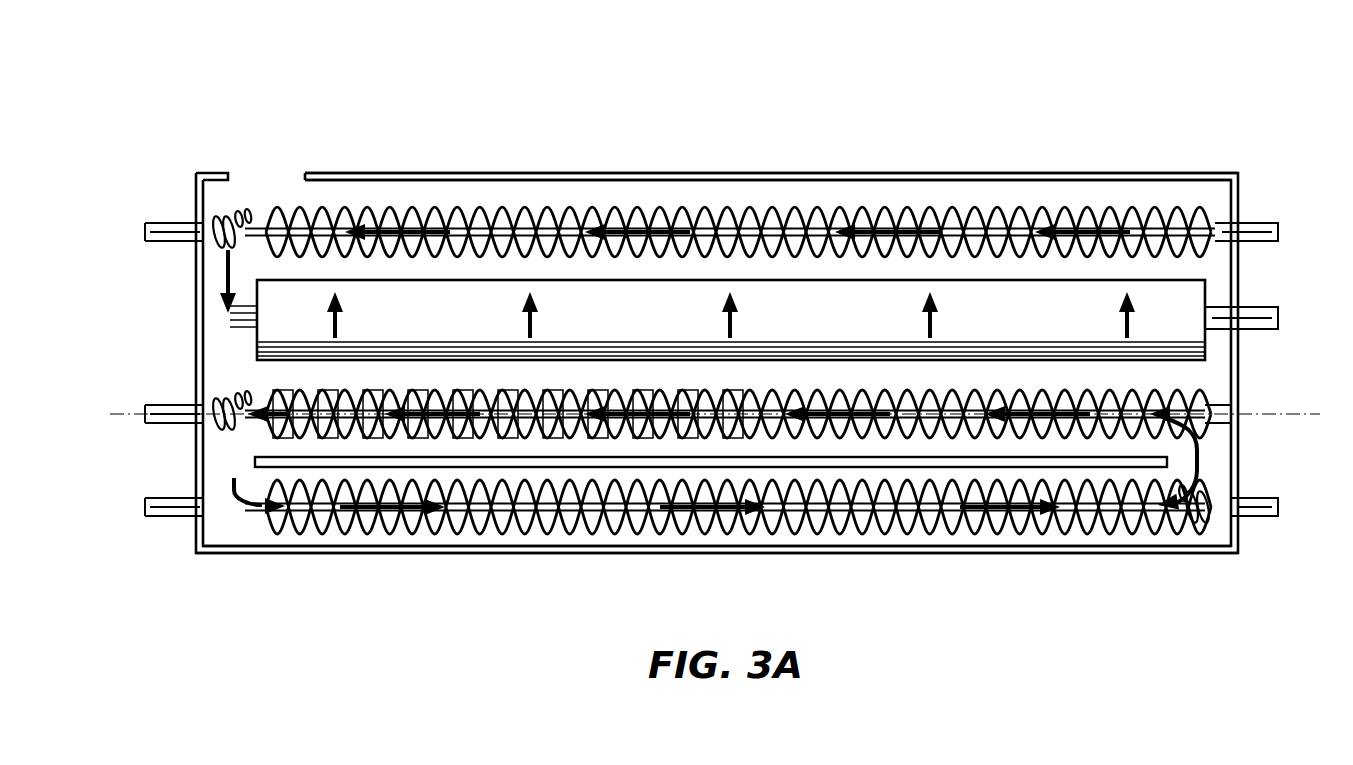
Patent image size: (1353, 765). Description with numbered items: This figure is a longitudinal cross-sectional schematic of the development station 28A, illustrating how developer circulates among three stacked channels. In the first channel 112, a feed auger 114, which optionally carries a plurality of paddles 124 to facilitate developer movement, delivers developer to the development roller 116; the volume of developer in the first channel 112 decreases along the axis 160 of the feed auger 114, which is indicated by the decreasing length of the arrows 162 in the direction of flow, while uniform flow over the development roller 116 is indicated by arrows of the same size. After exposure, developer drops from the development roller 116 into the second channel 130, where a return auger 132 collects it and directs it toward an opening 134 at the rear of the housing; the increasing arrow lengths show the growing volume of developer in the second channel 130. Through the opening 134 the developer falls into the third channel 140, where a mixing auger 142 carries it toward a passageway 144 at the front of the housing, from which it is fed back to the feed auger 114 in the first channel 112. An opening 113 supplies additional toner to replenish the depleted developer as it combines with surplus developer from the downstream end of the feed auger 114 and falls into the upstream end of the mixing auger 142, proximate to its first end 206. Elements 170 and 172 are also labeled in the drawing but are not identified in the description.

The development station 28A is at (200, 134).
The opening 113 is at (272, 180).
The return auger 132 is at (592, 210).
The second channel 130 is at (847, 196).
The development roller 116 is at (1182, 282).
The feed auger 114 is at (1182, 392).
The axis 160 is at (1297, 414).
The passageway 144 is at (1217, 458).
The mixing paddle 172 is at (293, 395).
The opening 134 is at (218, 475).
The first end 206 is at (180, 520).
The paddles 124 is at (363, 443).
The mixing auger 142 is at (480, 527).
The third channel 140 is at (860, 535).
The first channel 112 is at (1030, 445).
The paddle 170 is at (733, 395).
The arrows 162 is at (833, 395).